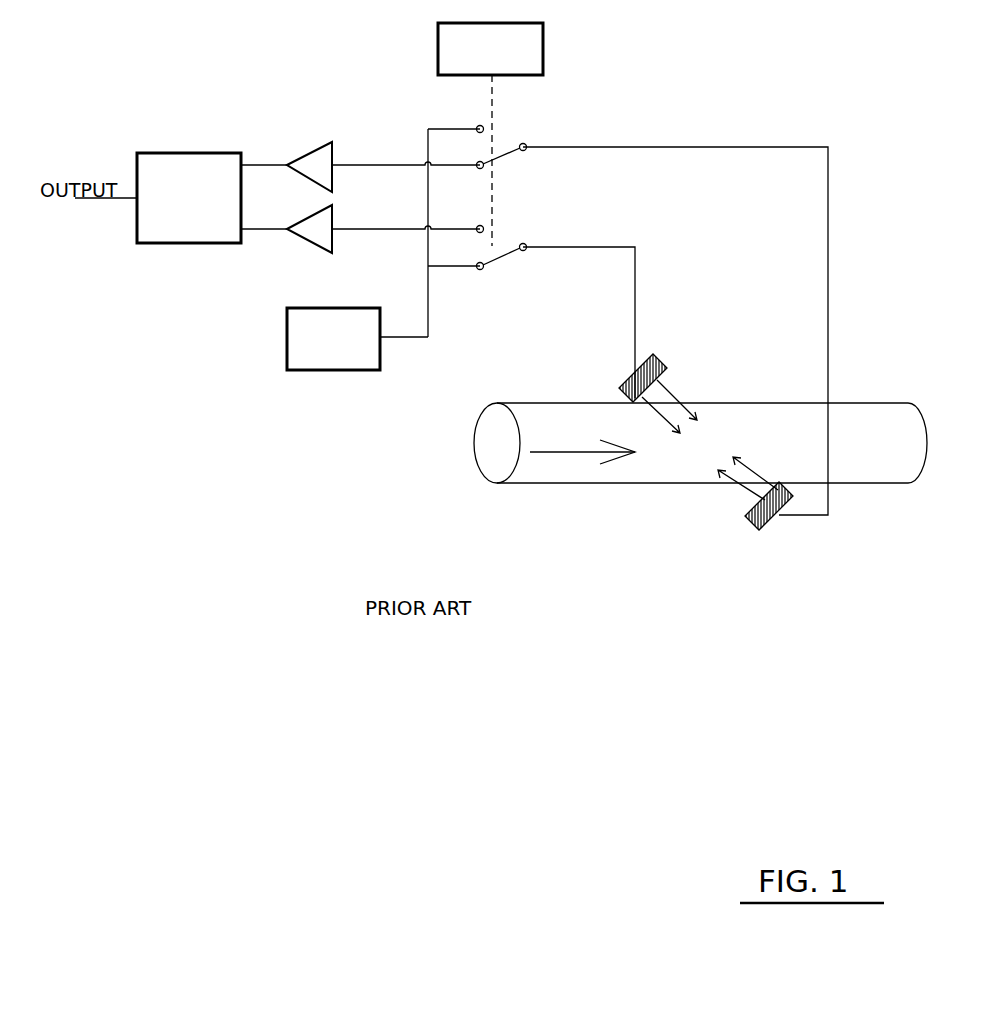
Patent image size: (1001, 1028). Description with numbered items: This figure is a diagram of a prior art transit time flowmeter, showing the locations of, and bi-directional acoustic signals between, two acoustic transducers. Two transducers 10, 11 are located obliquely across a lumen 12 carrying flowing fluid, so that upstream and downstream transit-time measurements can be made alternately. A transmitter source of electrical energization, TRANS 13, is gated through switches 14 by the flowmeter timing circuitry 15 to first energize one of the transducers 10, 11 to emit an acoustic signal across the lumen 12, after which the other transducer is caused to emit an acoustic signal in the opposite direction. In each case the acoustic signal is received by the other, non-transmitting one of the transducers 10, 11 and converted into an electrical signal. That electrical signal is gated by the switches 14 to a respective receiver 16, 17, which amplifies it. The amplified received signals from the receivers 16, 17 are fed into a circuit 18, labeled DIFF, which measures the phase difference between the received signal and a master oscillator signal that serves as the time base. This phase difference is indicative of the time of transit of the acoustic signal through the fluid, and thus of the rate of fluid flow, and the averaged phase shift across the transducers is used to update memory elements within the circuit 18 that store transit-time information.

The acoustic transducer 10 is at (660, 360).
The acoustic transducer 11 is at (770, 520).
The lumen 12 is at (620, 483).
The transmitter source of electrical energization 13 is at (303, 370).
The switches 14 is at (517, 173).
The flowmeter timing circuitry 15 is at (543, 42).
The receiver 16 is at (318, 253).
The receiver 17 is at (316, 143).
The phase difference circuit 18 is at (194, 243).